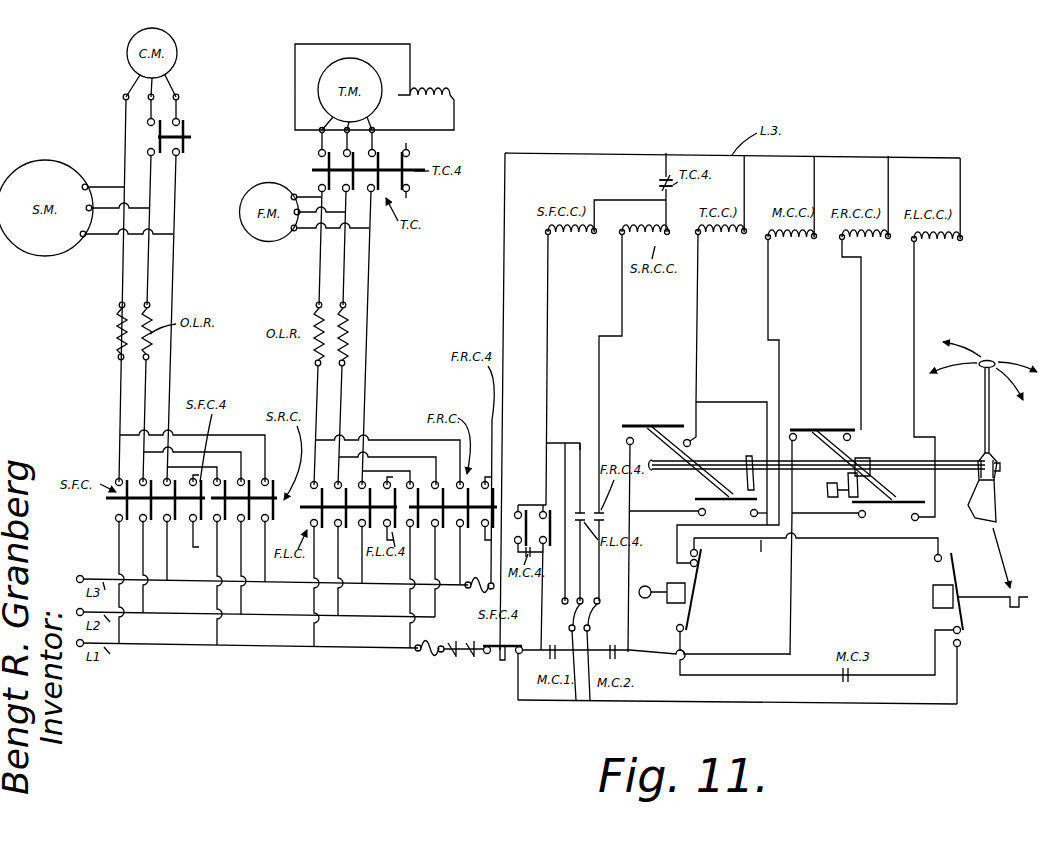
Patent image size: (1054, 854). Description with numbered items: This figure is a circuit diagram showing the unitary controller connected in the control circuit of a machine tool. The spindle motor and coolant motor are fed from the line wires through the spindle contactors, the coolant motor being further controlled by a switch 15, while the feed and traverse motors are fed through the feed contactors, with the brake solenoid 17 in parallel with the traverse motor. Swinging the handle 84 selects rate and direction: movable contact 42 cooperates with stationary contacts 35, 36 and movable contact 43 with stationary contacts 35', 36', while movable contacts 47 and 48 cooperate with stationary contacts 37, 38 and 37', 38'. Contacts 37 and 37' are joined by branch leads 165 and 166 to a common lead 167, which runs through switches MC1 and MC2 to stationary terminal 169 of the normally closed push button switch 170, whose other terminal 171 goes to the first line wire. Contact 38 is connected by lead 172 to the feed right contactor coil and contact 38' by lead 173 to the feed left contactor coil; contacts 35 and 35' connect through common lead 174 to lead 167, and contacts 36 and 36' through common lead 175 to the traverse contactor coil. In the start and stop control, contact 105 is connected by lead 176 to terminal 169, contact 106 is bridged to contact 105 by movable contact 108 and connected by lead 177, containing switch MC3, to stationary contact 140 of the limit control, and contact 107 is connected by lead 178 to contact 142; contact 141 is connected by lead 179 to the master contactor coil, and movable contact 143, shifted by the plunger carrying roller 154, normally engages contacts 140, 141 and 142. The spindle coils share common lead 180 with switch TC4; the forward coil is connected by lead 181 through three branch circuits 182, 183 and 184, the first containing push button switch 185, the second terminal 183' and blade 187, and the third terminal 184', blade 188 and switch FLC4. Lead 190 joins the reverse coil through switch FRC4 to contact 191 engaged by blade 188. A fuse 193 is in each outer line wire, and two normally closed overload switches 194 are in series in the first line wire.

The switch 15 is at (189, 142).
The energizing solenoid 17 is at (449, 80).
The stationary contact 35 is at (620, 451).
The stationary contact 36 is at (707, 443).
The stationary contact 37 is at (805, 474).
The stationary contact 38 is at (867, 444).
The movable contact 42 is at (637, 424).
The movable contact 43 is at (697, 499).
The movable contact 47 is at (830, 428).
The movable contact 48 is at (920, 480).
The handle 84 is at (992, 425).
The stationary contact 35' is at (667, 504).
The stationary contact 36' is at (742, 508).
The stationary contact 37' is at (873, 525).
The stationary contact 38' is at (938, 527).
The contact 105 is at (961, 646).
The contact 106 is at (953, 629).
The contact 107 is at (934, 558).
The movable contact 108 is at (958, 570).
The stationary contact 140 is at (676, 629).
The contact 141 is at (697, 564).
The contact 142 is at (697, 553).
The movable contact 143 is at (697, 591).
The roller 154 is at (641, 598).
The branch lead 165 is at (785, 510).
The branch lead 166 is at (811, 539).
The common lead 167 is at (791, 612).
The stationary terminal 169 is at (520, 656).
The push button switch 170 is at (489, 656).
The stationary terminal 171 is at (471, 659).
The lead 172 is at (861, 308).
The lead 173 is at (914, 306).
The common lead 174 is at (632, 560).
The common lead 175 is at (697, 318).
The lead 176 is at (814, 706).
The lead 177 is at (855, 677).
The lead 178 is at (774, 557).
The lead 179 is at (779, 312).
The common lead 180 is at (660, 184).
The lead 181 is at (548, 318).
The branch circuit 182 is at (545, 445).
The branch circuit 183 is at (560, 506).
The branch circuit 184 is at (576, 496).
The push button switch 185 is at (516, 505).
The stationary terminal 183' is at (557, 591).
The terminal 184' is at (538, 541).
The blade 187 is at (571, 640).
The blade 188 is at (588, 640).
The lead 190 is at (622, 320).
The contact 191 is at (599, 601).
The fuse 193 is at (430, 656).
The normally closed switch 194 is at (452, 659).